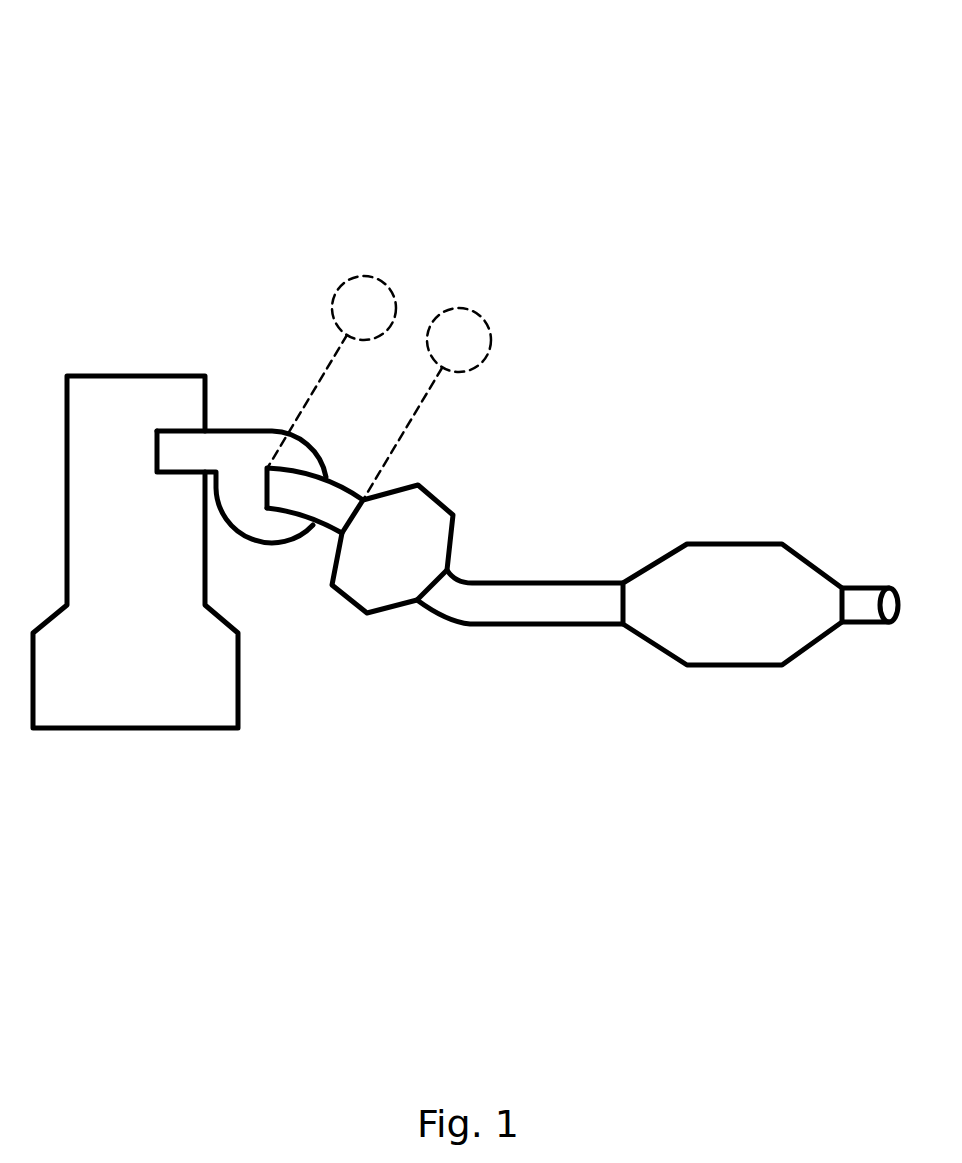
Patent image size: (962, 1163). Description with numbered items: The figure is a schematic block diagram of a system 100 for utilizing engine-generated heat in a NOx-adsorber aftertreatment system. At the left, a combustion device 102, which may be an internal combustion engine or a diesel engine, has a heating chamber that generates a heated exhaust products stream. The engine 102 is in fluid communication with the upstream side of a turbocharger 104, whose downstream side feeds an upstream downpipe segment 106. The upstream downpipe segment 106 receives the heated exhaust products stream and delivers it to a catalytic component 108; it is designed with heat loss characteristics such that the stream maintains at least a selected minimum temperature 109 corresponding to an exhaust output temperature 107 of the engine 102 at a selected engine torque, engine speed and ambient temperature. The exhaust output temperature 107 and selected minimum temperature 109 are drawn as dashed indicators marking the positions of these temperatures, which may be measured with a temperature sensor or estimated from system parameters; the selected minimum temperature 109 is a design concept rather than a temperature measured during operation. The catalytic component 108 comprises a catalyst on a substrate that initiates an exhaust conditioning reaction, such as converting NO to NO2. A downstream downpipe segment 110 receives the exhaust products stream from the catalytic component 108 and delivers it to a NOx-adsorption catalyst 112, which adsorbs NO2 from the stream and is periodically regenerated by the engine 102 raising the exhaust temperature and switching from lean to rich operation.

The system 100 is at (128, 51).
The combustion device 102 is at (174, 376).
The turbocharger 104 is at (228, 431).
The upstream downpipe segment 106 is at (343, 484).
The exhaust output temperature 107 is at (360, 276).
The catalytic component 108 is at (440, 491).
The selected minimum temperature 109 is at (462, 308).
The downstream downpipe segment 110 is at (492, 583).
The NOx-adsorption catalyst 112 is at (682, 544).